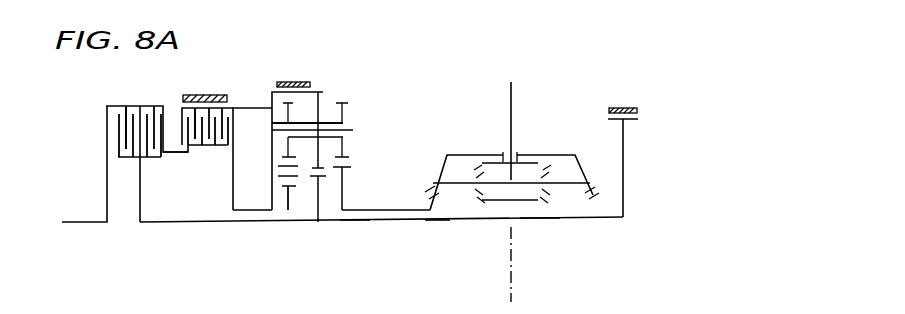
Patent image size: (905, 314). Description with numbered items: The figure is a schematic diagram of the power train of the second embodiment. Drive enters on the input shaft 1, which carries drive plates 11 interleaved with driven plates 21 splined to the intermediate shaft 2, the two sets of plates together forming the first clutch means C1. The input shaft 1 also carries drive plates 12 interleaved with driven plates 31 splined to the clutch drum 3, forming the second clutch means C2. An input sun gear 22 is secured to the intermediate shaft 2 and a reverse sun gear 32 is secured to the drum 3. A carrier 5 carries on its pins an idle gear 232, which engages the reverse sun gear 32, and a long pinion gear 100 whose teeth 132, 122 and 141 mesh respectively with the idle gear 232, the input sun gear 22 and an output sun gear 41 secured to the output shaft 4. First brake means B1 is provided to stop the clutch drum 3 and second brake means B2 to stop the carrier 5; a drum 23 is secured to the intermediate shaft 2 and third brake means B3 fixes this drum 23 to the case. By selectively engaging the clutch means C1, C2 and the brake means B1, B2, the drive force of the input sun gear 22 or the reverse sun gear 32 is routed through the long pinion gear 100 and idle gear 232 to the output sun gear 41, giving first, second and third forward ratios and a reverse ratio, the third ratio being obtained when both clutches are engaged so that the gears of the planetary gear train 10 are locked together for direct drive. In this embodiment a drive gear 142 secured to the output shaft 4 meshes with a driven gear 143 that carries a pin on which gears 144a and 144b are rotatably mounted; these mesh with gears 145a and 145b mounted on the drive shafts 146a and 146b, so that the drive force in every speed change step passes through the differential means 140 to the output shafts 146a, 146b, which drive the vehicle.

The input shaft 1 is at (84, 221).
The drive plates 11 is at (121, 115).
The driven plates 21 is at (151, 164).
The first clutch means C1 is at (126, 172).
The second clutch means C2 is at (192, 157).
The driven plates 31 is at (189, 116).
The drive plates 12 is at (192, 167).
The first brake means B1 is at (210, 94).
The second brake means B2 is at (299, 81).
The third brake means B3 is at (624, 106).
The clutch drum 3 is at (233, 109).
The carrier 5 is at (272, 110).
The long pinion gear 100 is at (302, 123).
The teeth 122 is at (353, 130).
The teeth 132 is at (288, 144).
The idle gear 232 is at (286, 189).
The reverse sun gear 32 is at (288, 194).
The input sun gear 22 is at (318, 202).
The teeth 141 is at (346, 152).
The planetary gear train 10 is at (342, 178).
The output shaft 4 is at (378, 210).
The intermediate shaft 2 is at (207, 223).
The output sun gear 41 is at (365, 219).
The drive gear 142 is at (437, 218).
The driven gear 143 is at (440, 178).
The differential means 140 is at (511, 178).
The gear 144a is at (568, 181).
The gear 144b is at (478, 175).
The gear 145a is at (540, 155).
The gear 145b is at (530, 203).
The drive shaft 146a is at (512, 93).
The drive shaft 146b is at (518, 274).
The drum 23 is at (628, 122).